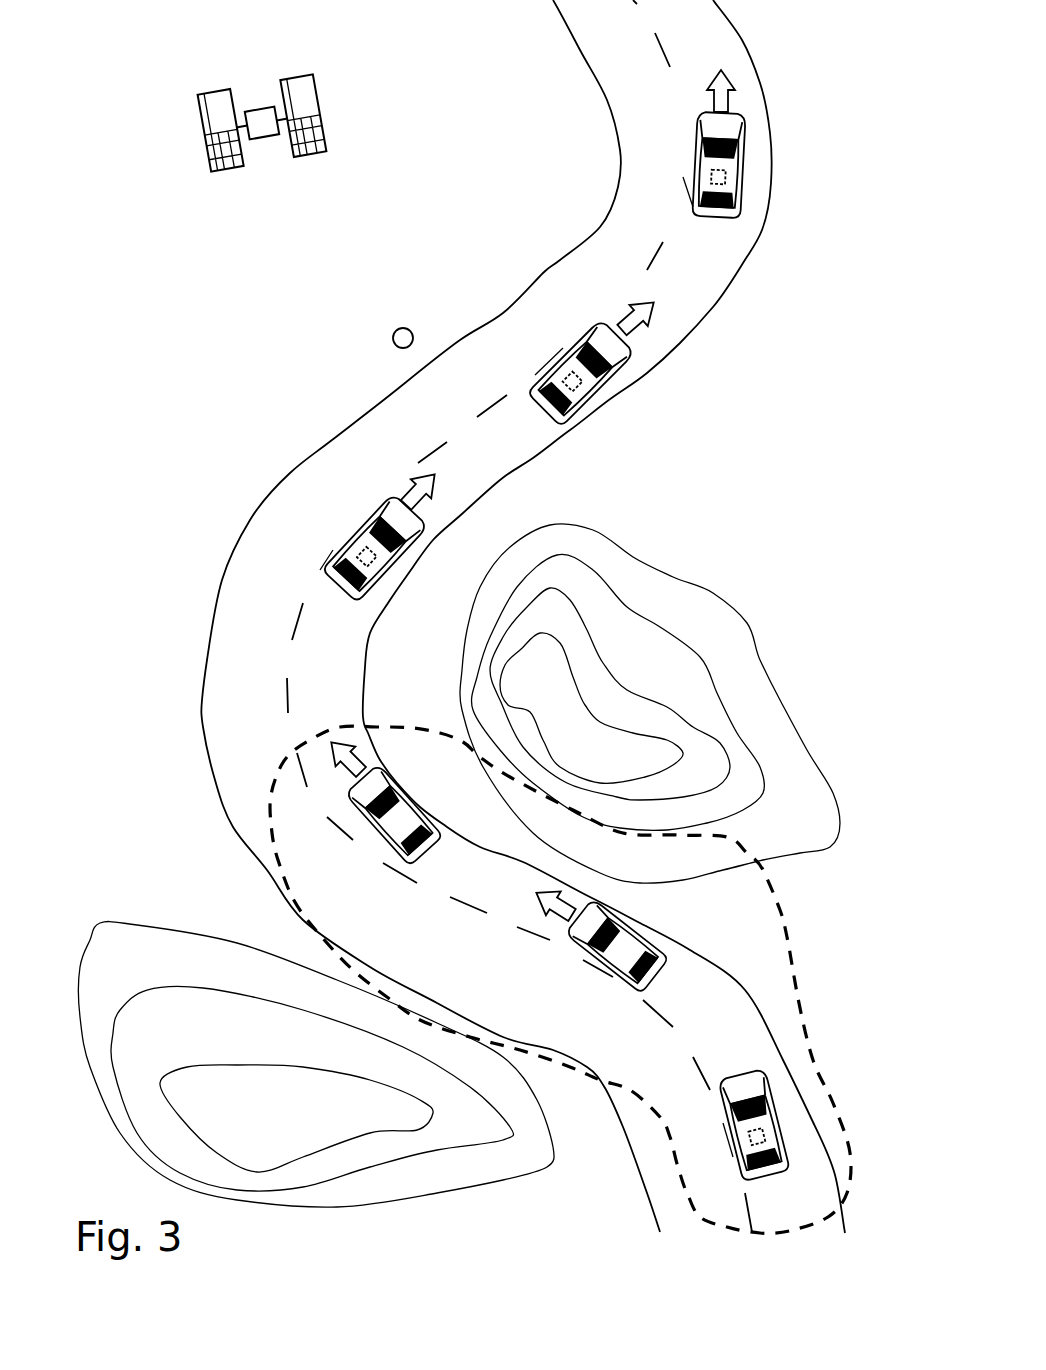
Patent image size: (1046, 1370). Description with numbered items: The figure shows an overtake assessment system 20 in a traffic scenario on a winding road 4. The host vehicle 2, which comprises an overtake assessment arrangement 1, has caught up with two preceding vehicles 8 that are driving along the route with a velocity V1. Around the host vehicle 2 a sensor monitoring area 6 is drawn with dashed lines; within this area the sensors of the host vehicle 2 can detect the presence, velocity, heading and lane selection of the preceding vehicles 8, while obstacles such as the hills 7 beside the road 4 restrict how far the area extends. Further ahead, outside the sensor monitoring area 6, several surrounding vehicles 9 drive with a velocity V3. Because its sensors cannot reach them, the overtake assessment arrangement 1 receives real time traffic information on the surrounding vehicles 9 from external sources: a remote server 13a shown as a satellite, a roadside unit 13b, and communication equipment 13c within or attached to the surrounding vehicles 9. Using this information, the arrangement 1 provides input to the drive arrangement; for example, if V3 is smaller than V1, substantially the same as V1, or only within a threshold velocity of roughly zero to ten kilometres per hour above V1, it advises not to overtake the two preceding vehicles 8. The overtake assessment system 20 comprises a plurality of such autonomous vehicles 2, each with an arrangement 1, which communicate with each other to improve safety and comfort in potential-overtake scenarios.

The overtake assessment arrangement 1 is at (755, 1143).
The host vehicle 2 is at (792, 1104).
The road 4 is at (207, 624).
The sensor monitoring area 6 is at (787, 936).
The hill 7 is at (798, 693).
The preceding vehicle 8 is at (388, 840).
The surrounding vehicle 9 is at (744, 157).
The remote server 13a is at (352, 117).
The roadside unit 13b is at (378, 319).
The communication equipment 13c is at (710, 178).
The overtake assessment system 20 is at (75, 90).
The velocity of preceding vehicles V1 is at (349, 773).
The velocity of surrounding vehicles V3 is at (714, 106).